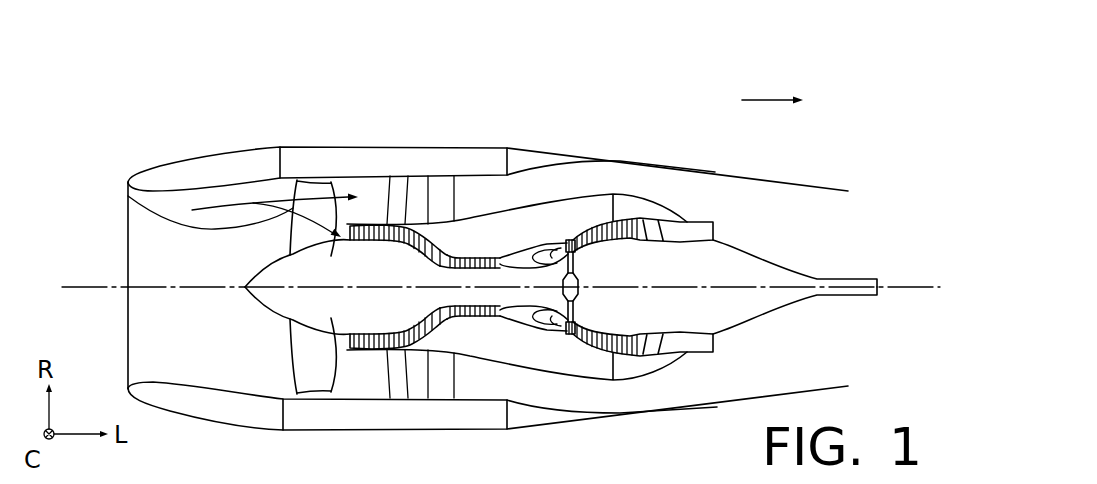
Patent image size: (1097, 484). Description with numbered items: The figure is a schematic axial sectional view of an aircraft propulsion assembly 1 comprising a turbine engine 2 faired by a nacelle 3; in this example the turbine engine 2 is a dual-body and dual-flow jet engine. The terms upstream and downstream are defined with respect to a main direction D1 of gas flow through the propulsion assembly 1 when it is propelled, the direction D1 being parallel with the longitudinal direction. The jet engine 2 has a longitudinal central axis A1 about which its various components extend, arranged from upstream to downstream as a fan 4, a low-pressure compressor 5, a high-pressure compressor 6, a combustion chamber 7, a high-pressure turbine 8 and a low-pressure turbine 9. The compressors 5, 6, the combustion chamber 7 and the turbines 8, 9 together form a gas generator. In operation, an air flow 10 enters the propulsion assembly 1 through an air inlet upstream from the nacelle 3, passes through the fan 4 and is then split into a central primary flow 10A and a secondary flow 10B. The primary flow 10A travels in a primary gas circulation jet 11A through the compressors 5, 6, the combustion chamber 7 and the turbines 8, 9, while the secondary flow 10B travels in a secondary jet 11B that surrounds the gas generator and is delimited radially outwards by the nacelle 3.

The aircraft propulsion assembly 1 is at (285, 106).
The turbine engine 2 is at (736, 227).
The nacelle 3 is at (402, 157).
The fan 4 is at (307, 353).
The low-pressure compressor 5 is at (372, 216).
The high-pressure compressor 6 is at (485, 245).
The combustion chamber 7 is at (545, 236).
The high-pressure turbine 8 is at (572, 230).
The low-pressure turbine 9 is at (640, 210).
The air flow 10 is at (210, 205).
The primary flow 10A is at (128, 195).
The secondary flow 10B is at (320, 195).
The primary gas circulation jet 11A is at (437, 322).
The secondary jet 11B is at (547, 389).
The longitudinal central axis A1 is at (72, 287).
The main direction of gas flow D1 is at (768, 97).